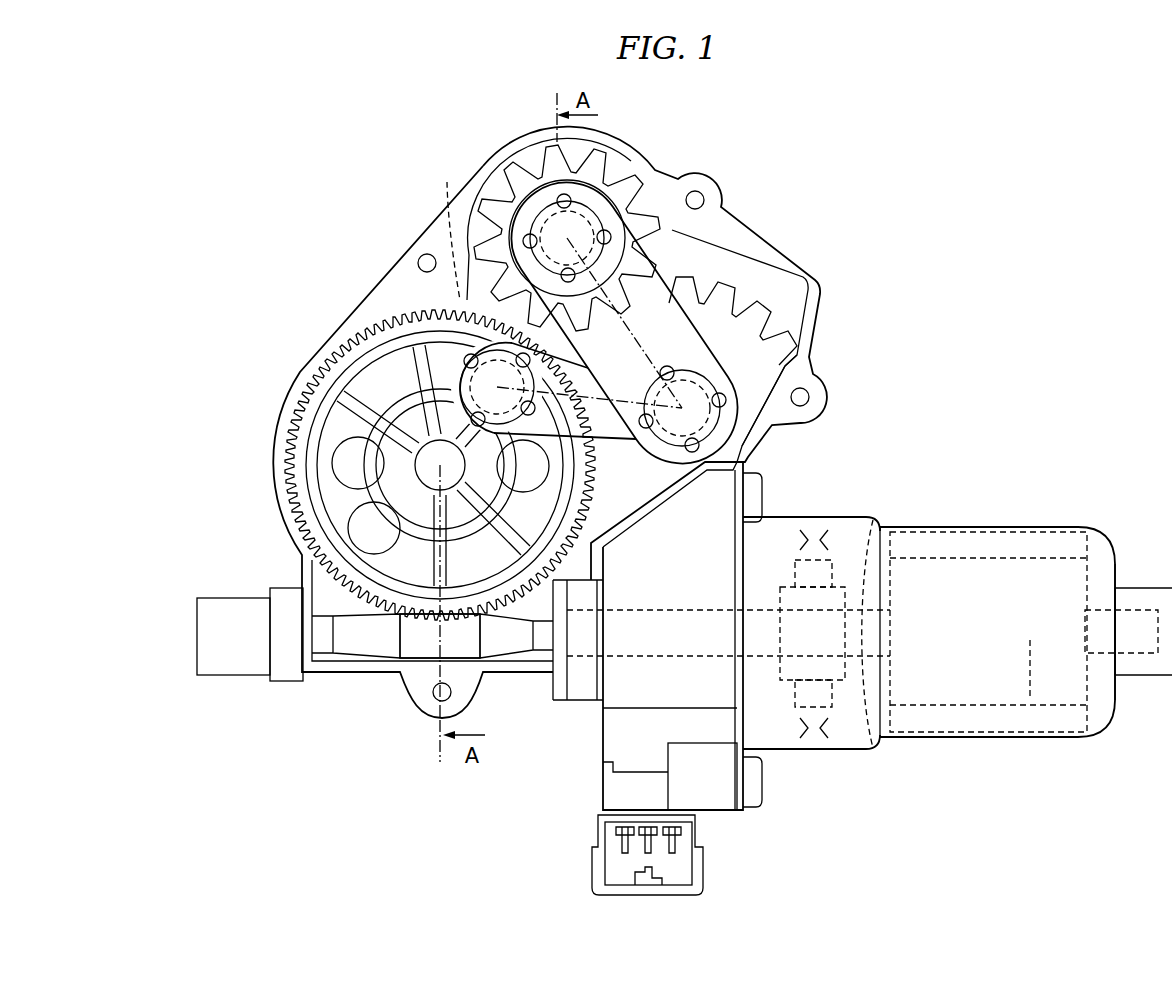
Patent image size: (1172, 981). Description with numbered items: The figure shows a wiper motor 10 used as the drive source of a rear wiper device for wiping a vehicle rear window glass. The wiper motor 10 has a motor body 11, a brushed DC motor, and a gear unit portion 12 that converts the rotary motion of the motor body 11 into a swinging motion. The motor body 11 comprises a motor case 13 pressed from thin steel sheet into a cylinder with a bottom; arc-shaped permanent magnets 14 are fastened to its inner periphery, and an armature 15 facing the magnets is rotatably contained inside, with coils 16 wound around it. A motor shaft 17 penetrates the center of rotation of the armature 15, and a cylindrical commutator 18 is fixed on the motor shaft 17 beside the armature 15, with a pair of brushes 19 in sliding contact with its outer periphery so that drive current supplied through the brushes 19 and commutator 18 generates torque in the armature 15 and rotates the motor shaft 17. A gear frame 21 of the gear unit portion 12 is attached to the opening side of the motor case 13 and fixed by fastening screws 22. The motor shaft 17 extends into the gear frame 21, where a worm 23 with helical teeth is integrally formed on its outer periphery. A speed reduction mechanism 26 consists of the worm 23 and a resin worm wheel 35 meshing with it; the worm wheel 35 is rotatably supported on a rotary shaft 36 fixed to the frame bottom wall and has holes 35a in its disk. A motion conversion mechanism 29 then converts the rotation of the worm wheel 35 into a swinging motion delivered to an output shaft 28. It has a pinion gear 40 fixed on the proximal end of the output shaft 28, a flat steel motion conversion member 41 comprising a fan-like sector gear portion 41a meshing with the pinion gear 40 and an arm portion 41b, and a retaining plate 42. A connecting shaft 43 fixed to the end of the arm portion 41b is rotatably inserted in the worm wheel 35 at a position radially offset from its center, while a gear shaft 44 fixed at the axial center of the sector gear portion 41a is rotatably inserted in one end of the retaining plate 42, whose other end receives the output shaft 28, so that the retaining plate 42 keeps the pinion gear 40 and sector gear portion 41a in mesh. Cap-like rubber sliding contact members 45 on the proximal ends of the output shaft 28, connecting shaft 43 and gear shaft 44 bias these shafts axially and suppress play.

The wiper motor 10 is at (878, 195).
The motor body 11 is at (985, 513).
The gear unit portion 12 is at (318, 256).
The motor case 13 is at (1098, 570).
The permanent magnets 14 is at (950, 545).
The armature 15 is at (1030, 700).
The coils 16 is at (870, 510).
The motor shaft 17 is at (1140, 653).
The commutator 18 is at (780, 680).
The brushes 19 is at (836, 522).
The gear frame 21 is at (345, 690).
The fastening screws 22 is at (760, 492).
The worm 23 is at (416, 642).
The speed reduction mechanism 26 is at (331, 587).
The output shaft 28 is at (541, 168).
The motion conversion mechanism 29 is at (697, 265).
The worm wheel 35 is at (280, 405).
The hole 35a is at (335, 452).
The rotary shaft 36 is at (420, 465).
The pinion gear 40 is at (497, 203).
The motion conversion member 41 is at (797, 368).
The sector gear portion 41a is at (725, 327).
The arm portion 41b is at (590, 372).
The retaining plate 42 is at (642, 267).
The connecting shaft 43 is at (446, 228).
The gear shaft 44 is at (814, 418).
The sliding contact members 45 is at (578, 233).